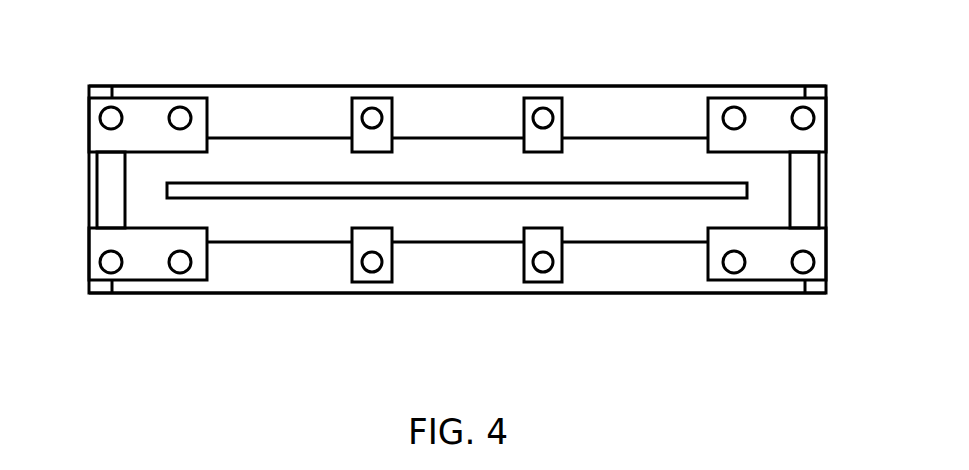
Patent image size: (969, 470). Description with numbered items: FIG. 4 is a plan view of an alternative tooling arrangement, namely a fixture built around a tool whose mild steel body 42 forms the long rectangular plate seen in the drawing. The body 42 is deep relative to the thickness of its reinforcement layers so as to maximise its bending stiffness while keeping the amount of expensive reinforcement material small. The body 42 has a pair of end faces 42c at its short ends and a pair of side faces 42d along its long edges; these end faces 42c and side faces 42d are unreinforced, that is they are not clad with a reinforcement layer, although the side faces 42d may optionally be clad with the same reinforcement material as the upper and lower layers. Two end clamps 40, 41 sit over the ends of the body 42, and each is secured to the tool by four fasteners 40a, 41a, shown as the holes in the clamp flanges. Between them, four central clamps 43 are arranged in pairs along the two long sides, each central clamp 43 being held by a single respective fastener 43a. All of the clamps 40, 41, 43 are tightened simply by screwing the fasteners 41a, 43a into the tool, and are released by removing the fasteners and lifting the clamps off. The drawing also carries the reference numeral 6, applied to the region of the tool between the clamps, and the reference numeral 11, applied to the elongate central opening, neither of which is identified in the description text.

The base body 6 is at (262, 147).
The slot 11 is at (308, 192).
The end clamp 40 is at (89, 210).
The fastener 40a is at (116, 269).
The end clamp 41 is at (826, 183).
The fastener 41a is at (733, 273).
The body of the tool 42 is at (272, 282).
The end face 42c is at (89, 287).
The side face 42d is at (690, 86).
The central clamp 43 is at (530, 97).
The fastener 43a is at (554, 120).